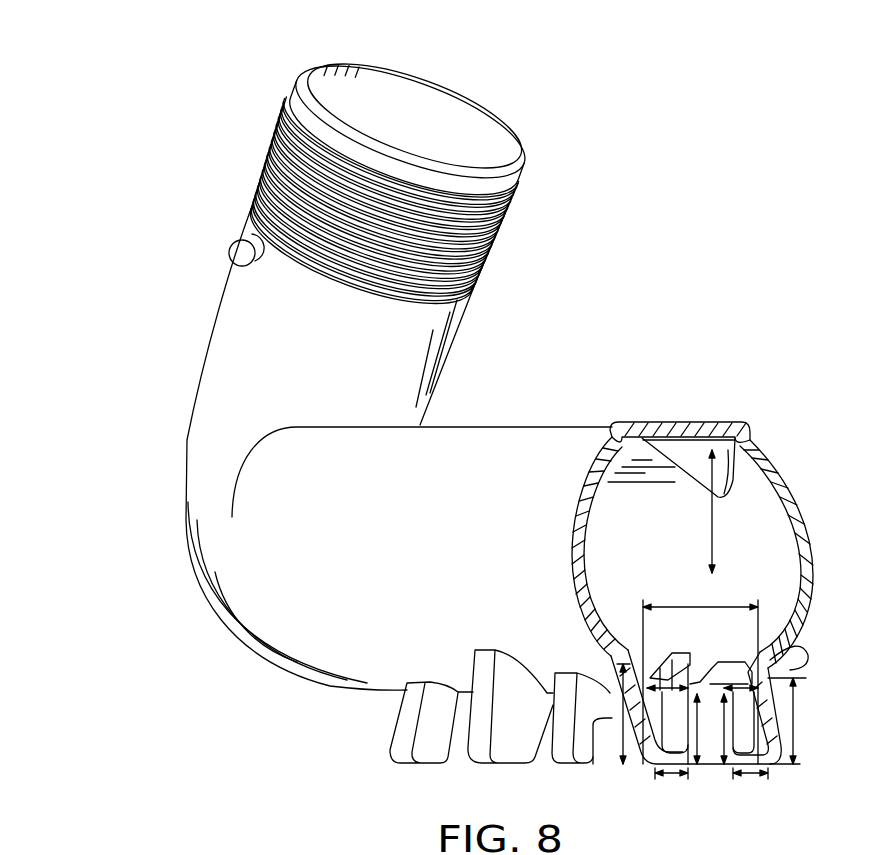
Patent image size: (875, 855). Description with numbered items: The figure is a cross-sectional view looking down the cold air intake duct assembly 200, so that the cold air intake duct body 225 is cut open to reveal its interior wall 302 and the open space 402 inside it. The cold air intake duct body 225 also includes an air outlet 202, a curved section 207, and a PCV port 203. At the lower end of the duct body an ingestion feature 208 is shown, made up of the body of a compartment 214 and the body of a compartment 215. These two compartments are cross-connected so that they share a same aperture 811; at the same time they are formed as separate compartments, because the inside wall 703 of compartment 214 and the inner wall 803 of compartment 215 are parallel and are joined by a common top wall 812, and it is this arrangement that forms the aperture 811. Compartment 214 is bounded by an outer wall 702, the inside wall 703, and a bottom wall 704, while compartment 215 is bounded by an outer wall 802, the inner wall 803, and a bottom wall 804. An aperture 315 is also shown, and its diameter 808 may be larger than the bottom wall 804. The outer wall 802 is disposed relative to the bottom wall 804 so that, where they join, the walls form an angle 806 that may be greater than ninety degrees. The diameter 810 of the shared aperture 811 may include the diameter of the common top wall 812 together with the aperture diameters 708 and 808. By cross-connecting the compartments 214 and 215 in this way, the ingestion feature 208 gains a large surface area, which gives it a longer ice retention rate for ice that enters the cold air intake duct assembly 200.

The cold air intake duct assembly 200 is at (686, 185).
The air outlet 202 is at (537, 150).
The PCV port 203 is at (693, 422).
The curved section 207 is at (253, 681).
The ingestion feature 208 is at (782, 815).
The compartment 214 is at (775, 740).
The compartment 215 is at (628, 737).
The cold air intake duct body 225 is at (460, 438).
The interior wall 302 is at (645, 472).
The aperture 315 is at (703, 667).
The open space 402 is at (712, 538).
The outer wall 702 is at (803, 730).
The inside wall 703 is at (715, 740).
The bottom wall 704 is at (747, 777).
The aperture diameter 708 is at (768, 653).
The outer wall 802 is at (615, 746).
The inner wall 803 is at (715, 750).
The bottom wall 804 is at (672, 777).
The angle 806 is at (640, 767).
The aperture diameter 808 is at (623, 699).
The aperture diameter 810 is at (700, 603).
The aperture 811 is at (678, 663).
The common top wall 812 is at (740, 667).